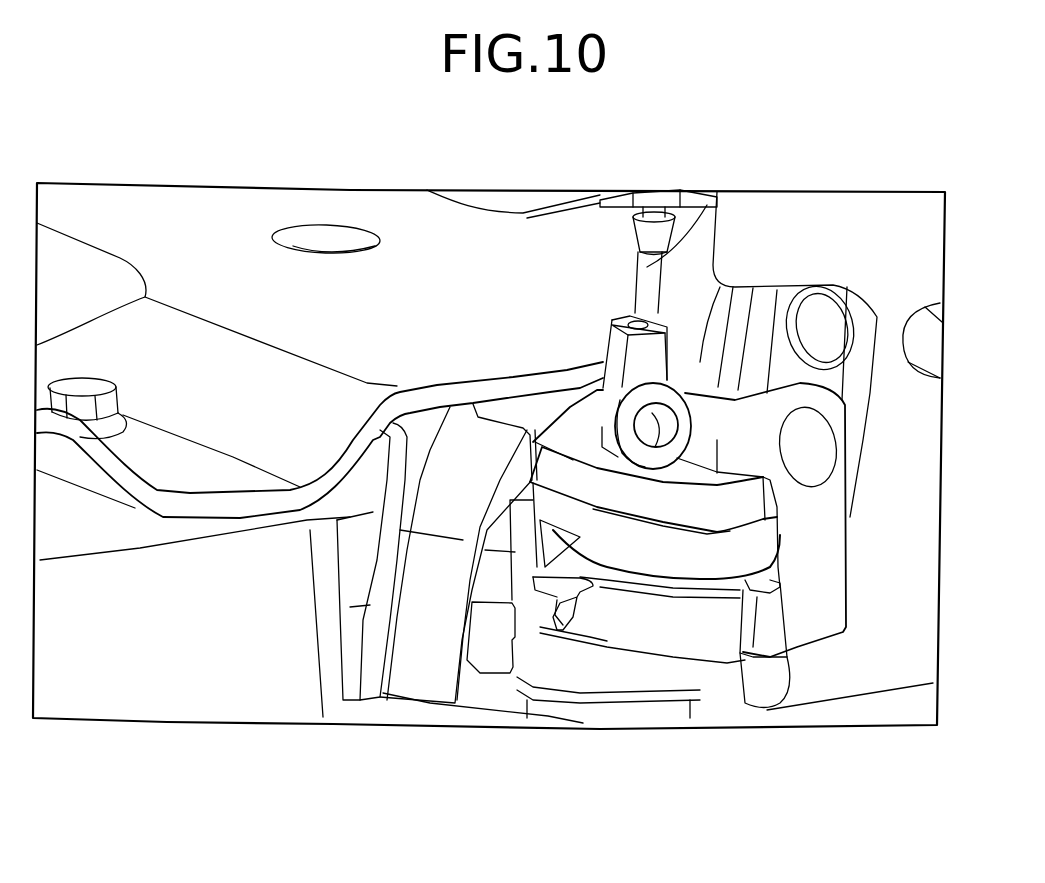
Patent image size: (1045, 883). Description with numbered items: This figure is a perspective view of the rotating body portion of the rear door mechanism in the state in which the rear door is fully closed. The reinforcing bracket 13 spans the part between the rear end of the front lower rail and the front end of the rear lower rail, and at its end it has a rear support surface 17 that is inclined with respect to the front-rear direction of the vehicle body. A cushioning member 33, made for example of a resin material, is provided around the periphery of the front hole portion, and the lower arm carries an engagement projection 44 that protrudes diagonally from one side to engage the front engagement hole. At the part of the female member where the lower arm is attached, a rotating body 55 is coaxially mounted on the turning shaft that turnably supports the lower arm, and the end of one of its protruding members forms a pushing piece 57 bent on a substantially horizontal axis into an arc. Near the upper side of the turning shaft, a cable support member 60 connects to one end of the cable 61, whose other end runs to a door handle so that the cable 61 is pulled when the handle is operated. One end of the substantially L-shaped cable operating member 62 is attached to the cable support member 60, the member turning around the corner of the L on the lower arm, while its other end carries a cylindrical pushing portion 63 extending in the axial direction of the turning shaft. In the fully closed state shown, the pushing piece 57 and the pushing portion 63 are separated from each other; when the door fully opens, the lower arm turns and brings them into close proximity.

The reinforcing bracket 13 is at (205, 710).
The rear support surface 17 is at (333, 702).
The engagement projection 44 is at (357, 718).
The cushioning member 33 is at (420, 690).
The pushing piece 57 is at (582, 585).
The rotating body 55 is at (673, 583).
The pushing portion 63 is at (750, 632).
The cable support member 60 is at (603, 333).
The cable 61 is at (700, 412).
The cable operating member 62 is at (720, 412).